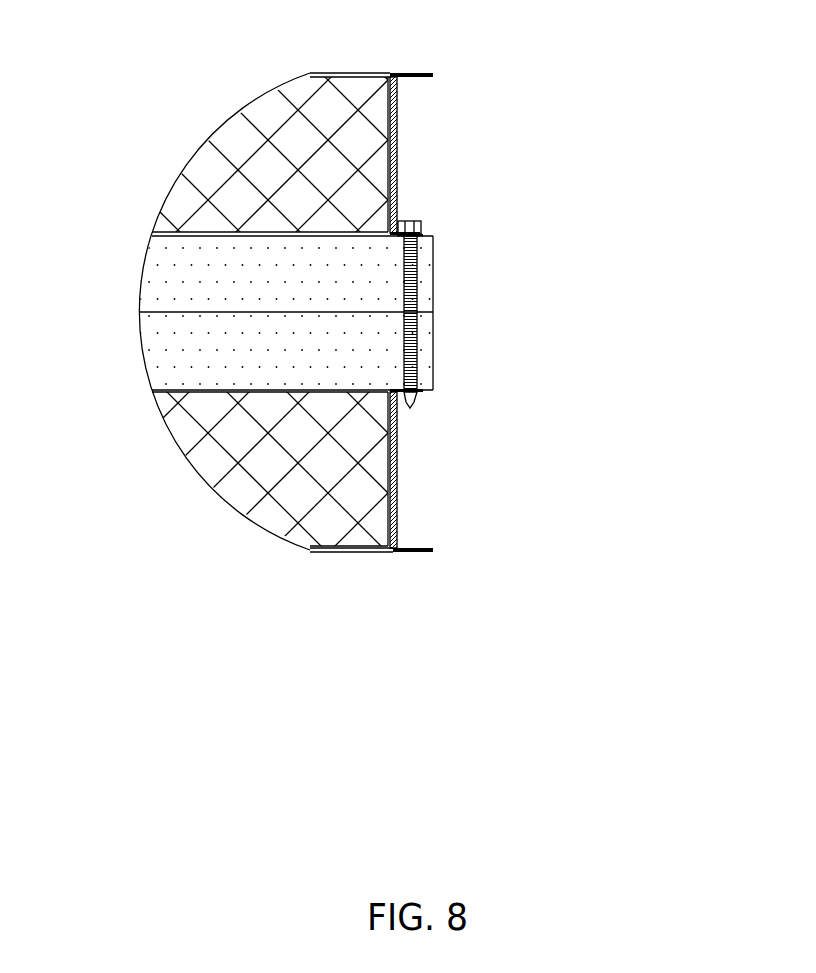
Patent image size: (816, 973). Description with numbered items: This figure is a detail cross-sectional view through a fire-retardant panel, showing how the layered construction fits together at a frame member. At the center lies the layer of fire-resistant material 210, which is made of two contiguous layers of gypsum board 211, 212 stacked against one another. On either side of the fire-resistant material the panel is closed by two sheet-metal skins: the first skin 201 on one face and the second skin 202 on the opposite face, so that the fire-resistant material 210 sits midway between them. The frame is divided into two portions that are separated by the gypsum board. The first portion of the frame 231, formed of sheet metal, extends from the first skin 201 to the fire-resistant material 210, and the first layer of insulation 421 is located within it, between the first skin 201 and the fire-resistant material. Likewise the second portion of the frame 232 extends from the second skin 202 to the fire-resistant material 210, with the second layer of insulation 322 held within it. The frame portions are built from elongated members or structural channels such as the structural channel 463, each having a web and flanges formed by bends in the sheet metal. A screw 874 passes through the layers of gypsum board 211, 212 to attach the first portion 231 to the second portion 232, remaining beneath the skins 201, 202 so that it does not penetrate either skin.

The second skin 202 is at (401, 72).
The first skin 201 is at (380, 556).
The second portion of the frame 232 is at (397, 190).
The first portion of the frame 231 is at (394, 525).
The structural channel 463 is at (394, 455).
The second layer of insulation 322 is at (230, 158).
The first layer of insulation 421 is at (258, 508).
The layer of gypsum board 212 is at (160, 268).
The layer of fire-resistant material 210 is at (224, 305).
The layer of gypsum board 211 is at (160, 311).
The screw 874 is at (413, 293).